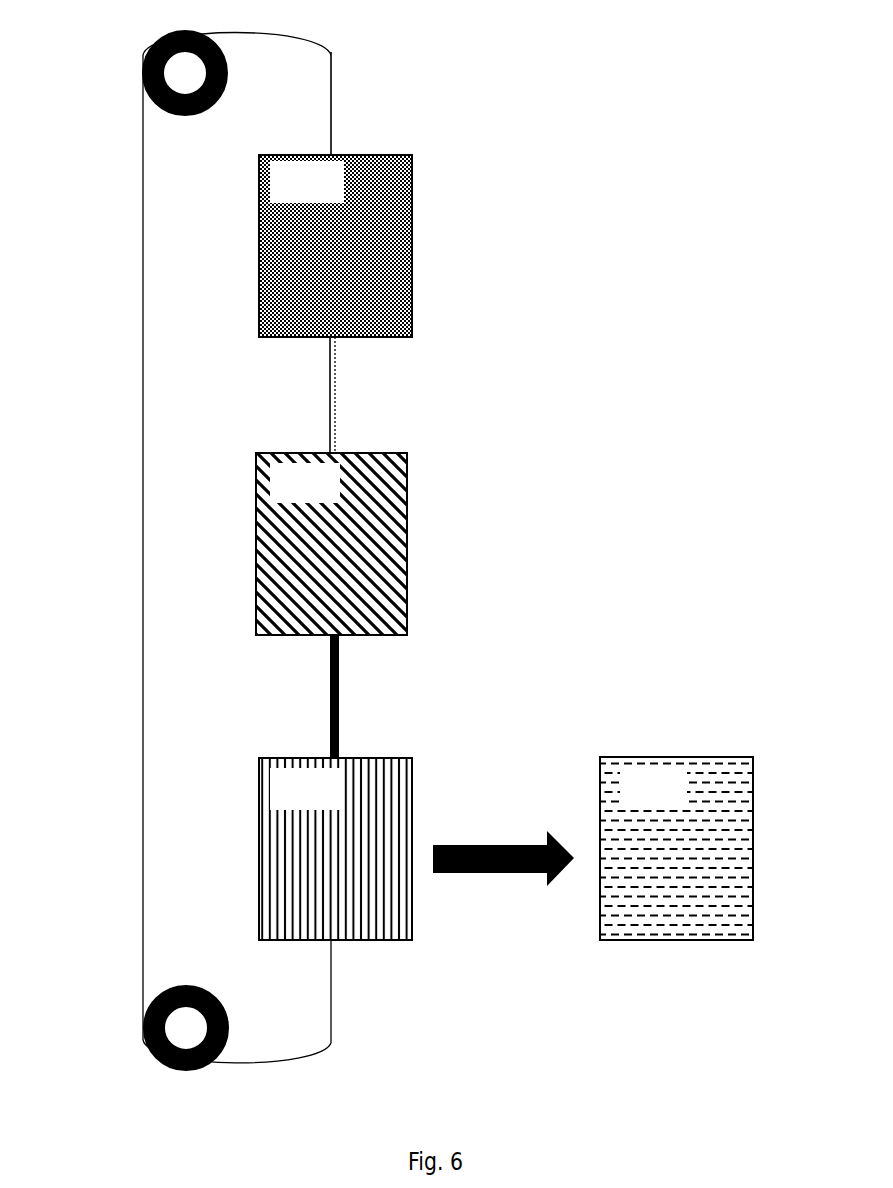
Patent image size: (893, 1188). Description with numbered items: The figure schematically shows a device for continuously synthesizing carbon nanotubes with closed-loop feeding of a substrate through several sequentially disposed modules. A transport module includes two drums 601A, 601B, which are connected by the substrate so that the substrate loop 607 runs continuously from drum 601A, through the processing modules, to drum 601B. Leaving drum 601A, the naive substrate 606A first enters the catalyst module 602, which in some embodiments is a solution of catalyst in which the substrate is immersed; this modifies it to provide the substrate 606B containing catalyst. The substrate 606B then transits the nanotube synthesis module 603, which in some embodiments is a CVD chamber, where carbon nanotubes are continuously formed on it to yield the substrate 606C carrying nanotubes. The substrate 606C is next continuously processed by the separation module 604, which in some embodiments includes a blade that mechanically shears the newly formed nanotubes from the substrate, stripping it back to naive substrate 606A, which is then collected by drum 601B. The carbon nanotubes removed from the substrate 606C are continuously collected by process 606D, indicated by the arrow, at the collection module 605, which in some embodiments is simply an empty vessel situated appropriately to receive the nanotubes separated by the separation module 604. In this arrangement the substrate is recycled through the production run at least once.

The drum 601A is at (136, 73).
The drum 601B is at (131, 1028).
The catalyst module 602 is at (335, 246).
The nanotube synthesis module 603 is at (331, 544).
The separation module 604 is at (335, 849).
The collection module 605 is at (676, 848).
The naive substrate 606A is at (379, 103).
The substrate containing catalyst 606B is at (288, 395).
The substrate with carbon nanotubes 606C is at (290, 696).
The collection process 606D is at (503, 835).
The conveyor belt 607 is at (199, 548).